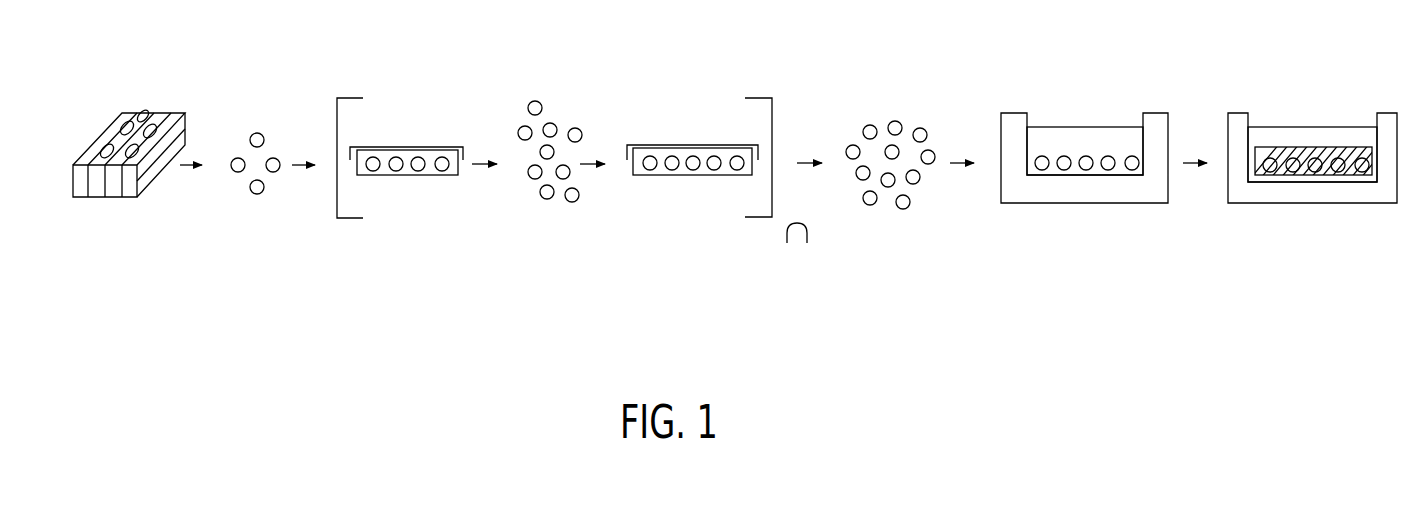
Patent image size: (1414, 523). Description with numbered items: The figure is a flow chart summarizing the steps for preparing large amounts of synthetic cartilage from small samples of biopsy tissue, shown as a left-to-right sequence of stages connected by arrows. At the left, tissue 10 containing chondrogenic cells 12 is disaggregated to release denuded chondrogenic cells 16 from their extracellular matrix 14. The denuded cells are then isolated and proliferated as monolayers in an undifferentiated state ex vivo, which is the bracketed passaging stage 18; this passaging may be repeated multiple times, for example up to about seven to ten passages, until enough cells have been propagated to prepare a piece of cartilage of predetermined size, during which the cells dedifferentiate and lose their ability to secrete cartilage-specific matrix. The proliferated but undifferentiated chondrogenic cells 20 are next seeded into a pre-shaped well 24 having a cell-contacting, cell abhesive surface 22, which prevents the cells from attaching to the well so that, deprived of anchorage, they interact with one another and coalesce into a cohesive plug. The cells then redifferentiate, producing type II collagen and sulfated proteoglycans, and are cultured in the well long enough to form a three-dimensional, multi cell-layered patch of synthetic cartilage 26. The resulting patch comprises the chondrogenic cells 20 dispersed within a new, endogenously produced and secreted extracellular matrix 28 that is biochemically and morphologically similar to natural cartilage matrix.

The tissue 10 is at (100, 137).
The chondrogenic cells 12 is at (144, 117).
The extracellular matrix 14 is at (122, 183).
The denuded chondrogenic cells 16 is at (282, 114).
The monolayer proliferation ex vivo 18 is at (747, 73).
The proliferated undifferentiated chondrogenic cells 20 is at (897, 122).
The cell abhesive surface 22 is at (1143, 140).
The pre-shaped well 24 is at (1050, 127).
The synthetic cartilage patch 26 is at (1266, 147).
The extracellular matrix 28 is at (1313, 147).